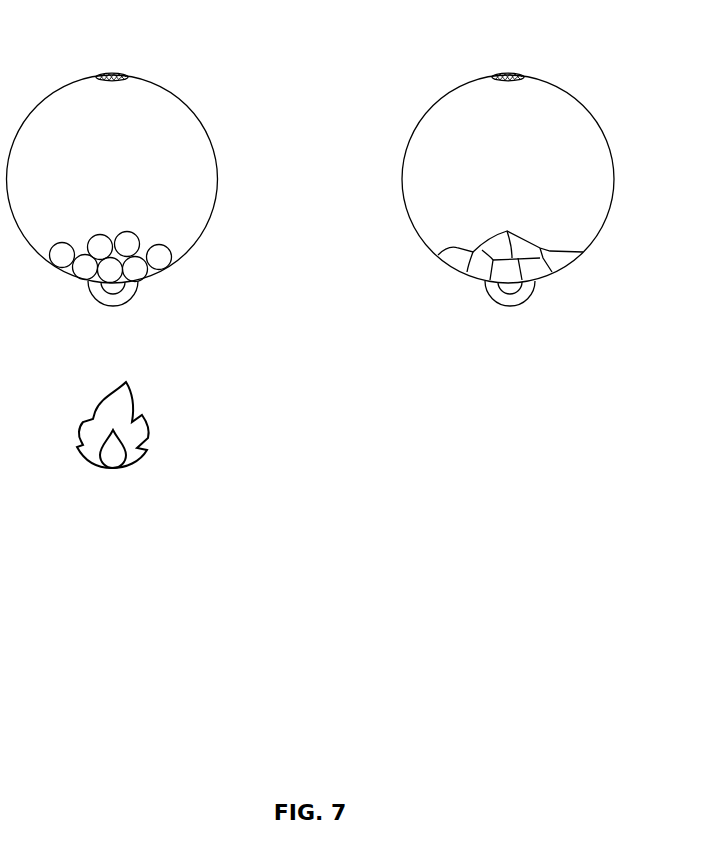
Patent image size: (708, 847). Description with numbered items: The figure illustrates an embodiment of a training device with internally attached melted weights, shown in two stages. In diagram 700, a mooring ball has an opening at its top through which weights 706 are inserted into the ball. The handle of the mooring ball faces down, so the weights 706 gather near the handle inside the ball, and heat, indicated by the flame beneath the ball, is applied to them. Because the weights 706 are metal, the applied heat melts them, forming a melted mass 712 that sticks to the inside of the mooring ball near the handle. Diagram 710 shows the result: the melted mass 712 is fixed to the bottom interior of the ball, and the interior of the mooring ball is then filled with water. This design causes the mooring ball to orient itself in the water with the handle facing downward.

The diagram 700 is at (185, 31).
The weights 706 is at (124, 231).
The diagram 710 is at (581, 31).
The melted mass 712 is at (512, 232).